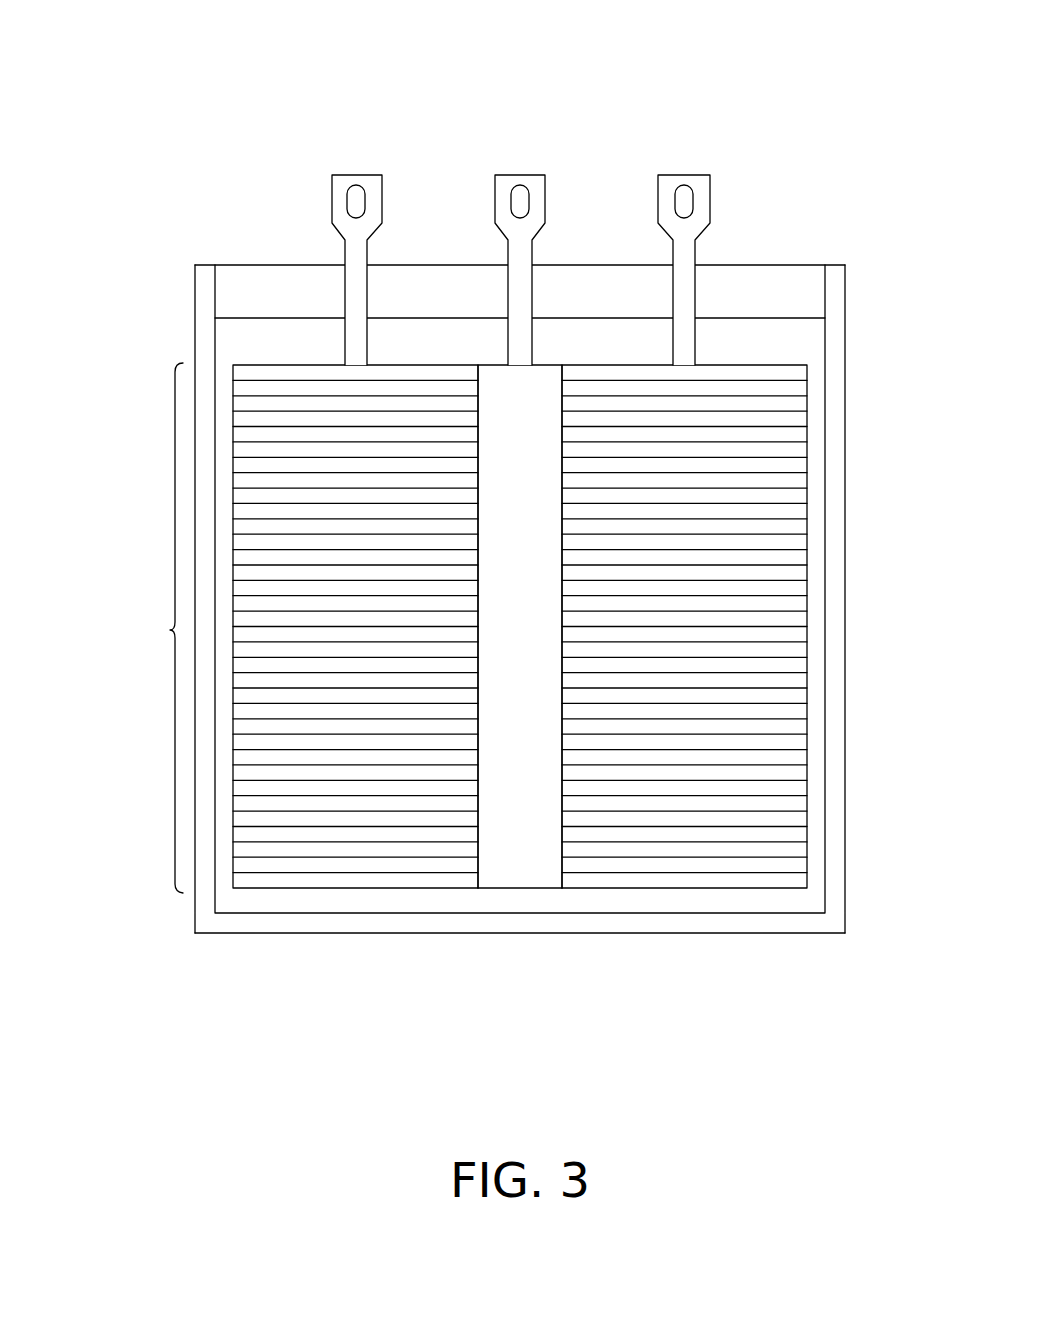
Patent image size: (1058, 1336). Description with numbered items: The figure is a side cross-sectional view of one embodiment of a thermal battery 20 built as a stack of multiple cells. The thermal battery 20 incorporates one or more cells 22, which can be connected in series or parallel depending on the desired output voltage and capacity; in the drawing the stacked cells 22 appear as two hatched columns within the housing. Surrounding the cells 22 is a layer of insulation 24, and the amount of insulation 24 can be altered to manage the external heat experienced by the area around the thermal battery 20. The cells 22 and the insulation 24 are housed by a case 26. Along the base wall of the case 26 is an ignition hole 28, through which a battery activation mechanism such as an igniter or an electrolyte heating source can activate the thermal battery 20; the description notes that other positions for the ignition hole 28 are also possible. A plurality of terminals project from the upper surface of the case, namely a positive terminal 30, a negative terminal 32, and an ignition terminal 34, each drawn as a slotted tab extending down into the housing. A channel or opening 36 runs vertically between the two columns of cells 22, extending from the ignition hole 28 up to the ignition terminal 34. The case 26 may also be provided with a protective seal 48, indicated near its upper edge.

The thermal battery 20 is at (595, 98).
The cells 22 is at (171, 630).
The insulation 24 is at (827, 548).
The case 26 is at (753, 933).
The ignition hole 28 is at (528, 888).
The positive terminal 30 is at (350, 173).
The negative terminal 32 is at (690, 173).
The ignition terminal 34 is at (517, 173).
The channel or opening 36 is at (535, 629).
The protective seal 48 is at (800, 263).